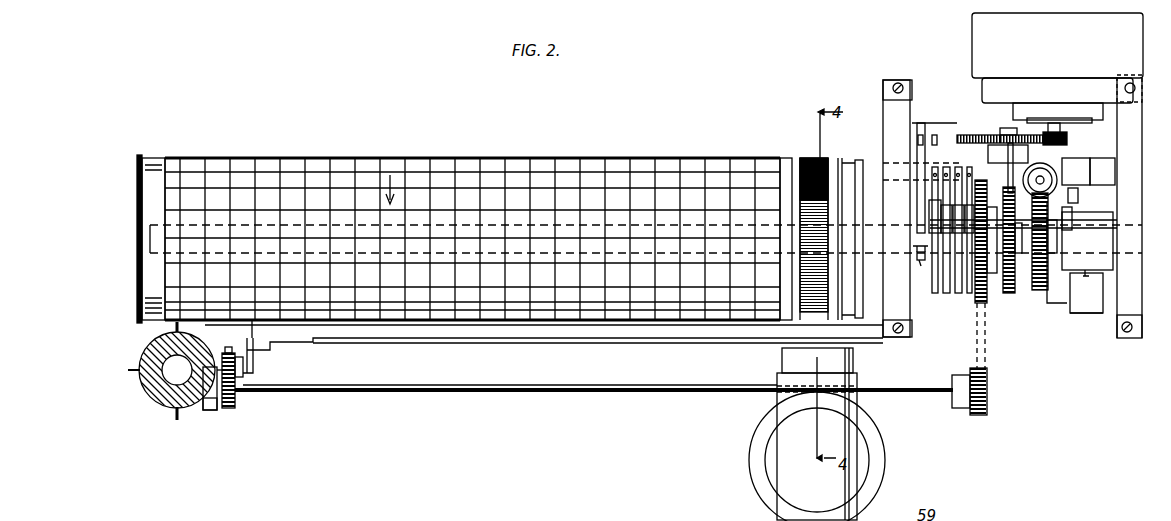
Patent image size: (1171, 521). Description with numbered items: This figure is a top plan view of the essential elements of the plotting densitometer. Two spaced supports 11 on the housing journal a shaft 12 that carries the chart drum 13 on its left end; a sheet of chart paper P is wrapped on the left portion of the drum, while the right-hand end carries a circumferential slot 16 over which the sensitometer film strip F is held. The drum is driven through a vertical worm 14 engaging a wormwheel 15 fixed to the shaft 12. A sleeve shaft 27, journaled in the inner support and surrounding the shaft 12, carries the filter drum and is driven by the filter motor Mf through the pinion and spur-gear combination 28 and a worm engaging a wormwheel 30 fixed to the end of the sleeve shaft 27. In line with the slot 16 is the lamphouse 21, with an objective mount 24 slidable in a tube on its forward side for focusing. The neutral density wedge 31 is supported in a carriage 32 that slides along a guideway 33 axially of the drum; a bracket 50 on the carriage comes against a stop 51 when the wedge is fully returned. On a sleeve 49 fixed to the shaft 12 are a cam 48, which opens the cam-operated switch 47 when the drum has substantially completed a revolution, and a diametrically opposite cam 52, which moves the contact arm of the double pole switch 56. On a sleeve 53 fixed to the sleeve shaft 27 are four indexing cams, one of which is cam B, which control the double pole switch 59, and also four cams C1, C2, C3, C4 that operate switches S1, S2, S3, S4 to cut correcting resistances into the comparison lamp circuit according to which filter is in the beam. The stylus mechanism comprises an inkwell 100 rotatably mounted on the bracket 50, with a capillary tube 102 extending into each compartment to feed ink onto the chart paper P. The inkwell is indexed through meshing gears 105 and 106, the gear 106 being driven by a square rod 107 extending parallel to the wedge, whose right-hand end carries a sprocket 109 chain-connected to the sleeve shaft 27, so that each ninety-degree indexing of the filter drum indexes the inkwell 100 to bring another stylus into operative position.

The chart paper P is at (318, 168).
The shaft 12 is at (681, 224).
The chart drum 13 is at (157, 157).
The circumferential slot 16 is at (796, 160).
The sensitometer film strip F is at (812, 157).
The neutral density wedge 31 is at (830, 162).
The sleeve shaft 27 is at (868, 215).
The supports 11 is at (884, 103).
The guideway 33 is at (880, 339).
The carriage 32 is at (528, 332).
The double pole switch 59 is at (921, 125).
The cam C1 is at (970, 292).
The cam C2 is at (961, 295).
The cam C3 is at (947, 290).
The cam C4 is at (934, 280).
The switch S1 is at (970, 166).
The switch S2 is at (968, 170).
The switch S3 is at (947, 166).
The switch S4 is at (936, 166).
The cam B is at (920, 271).
The sleeve 53 is at (915, 258).
The wormwheel 30 is at (1010, 296).
The wormwheel 15 is at (1041, 292).
The pinion and spur-gear combination 28 is at (1020, 133).
The vertical worm 14 is at (1056, 172).
The filter motor Mf is at (1057, 73).
The cam-operated switch 47 is at (1078, 195).
The cam 48 is at (1073, 222).
The sleeve 49 is at (1087, 241).
The cam 52 is at (1086, 291).
The double pole switch 56 is at (1090, 314).
The inkwell 100 is at (160, 400).
The capillary tube 102 is at (176, 333).
The stop 51 is at (210, 412).
The bracket 50 is at (216, 412).
The gear 106 is at (229, 410).
The gear 105 is at (244, 372).
The square rod 107 is at (436, 393).
The objective mount 24 is at (782, 350).
The lamphouse 21 is at (765, 445).
The sprocket 109 is at (985, 380).